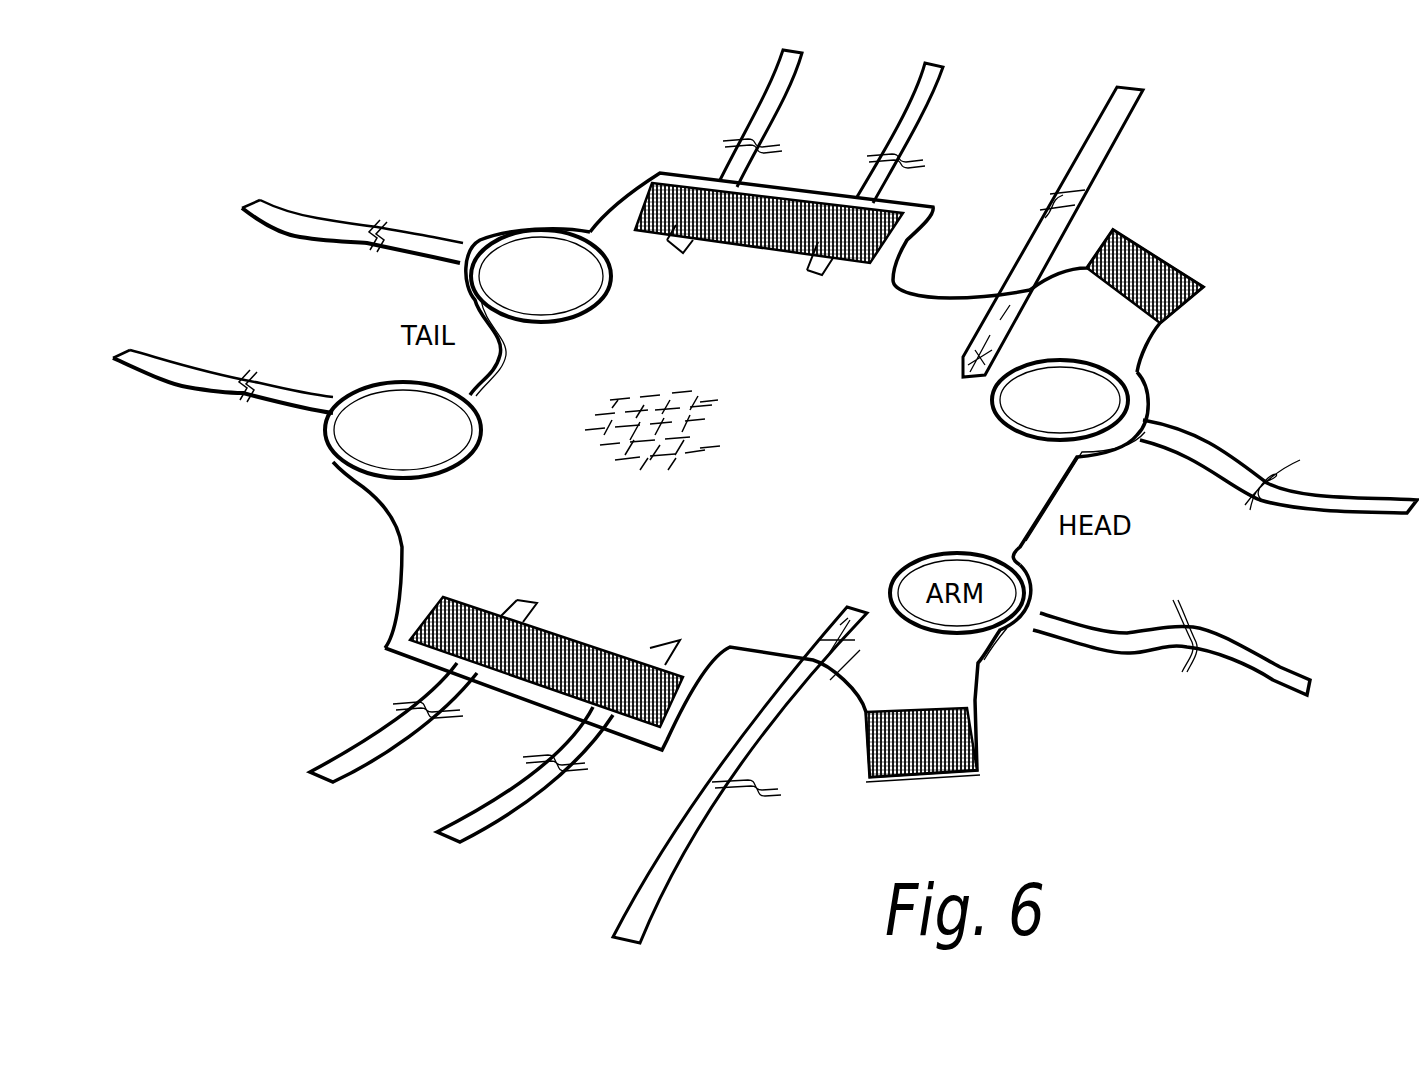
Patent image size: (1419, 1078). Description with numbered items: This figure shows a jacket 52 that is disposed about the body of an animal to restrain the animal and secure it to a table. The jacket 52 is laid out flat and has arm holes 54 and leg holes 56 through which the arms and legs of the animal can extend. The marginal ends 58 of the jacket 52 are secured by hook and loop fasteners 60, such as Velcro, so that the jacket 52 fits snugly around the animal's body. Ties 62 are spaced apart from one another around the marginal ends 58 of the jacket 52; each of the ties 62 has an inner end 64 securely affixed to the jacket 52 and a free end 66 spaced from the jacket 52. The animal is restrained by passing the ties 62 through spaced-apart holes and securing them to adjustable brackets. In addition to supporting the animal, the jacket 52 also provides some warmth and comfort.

The jacket 52 is at (665, 405).
The arm holes 54 is at (1097, 387).
The leg holes 56 is at (520, 250).
The marginal ends 58 is at (400, 658).
The hook and loop fasteners 60 is at (665, 190).
The ties 62 is at (280, 390).
The inner ends 64 is at (875, 195).
The free ends 66 is at (920, 105).